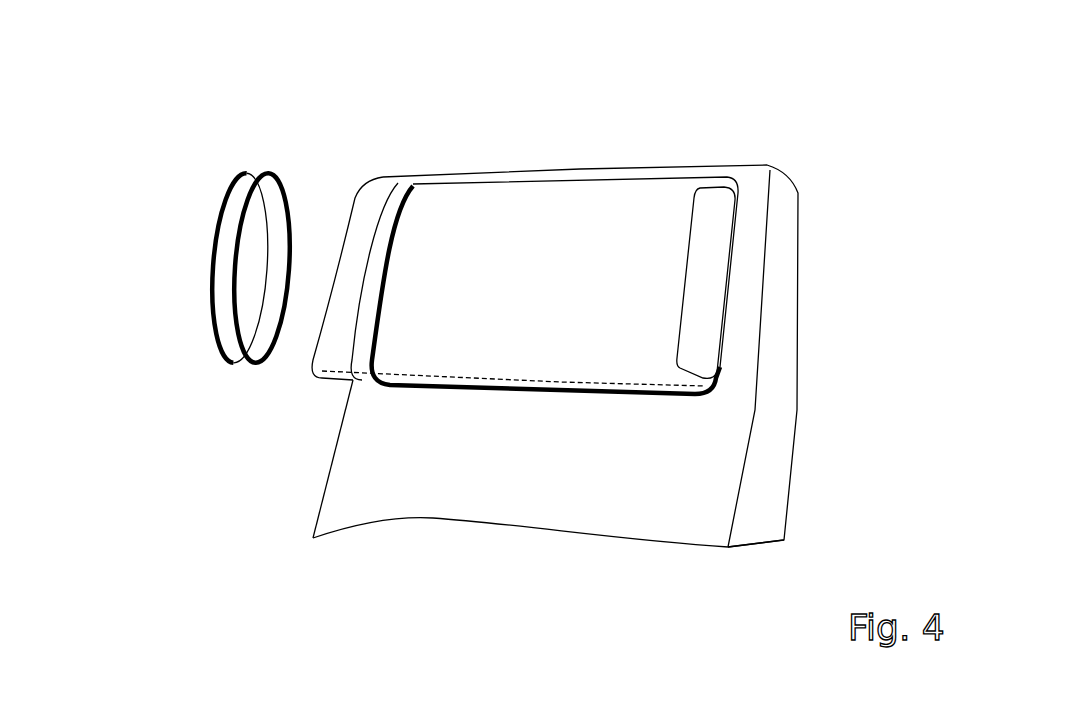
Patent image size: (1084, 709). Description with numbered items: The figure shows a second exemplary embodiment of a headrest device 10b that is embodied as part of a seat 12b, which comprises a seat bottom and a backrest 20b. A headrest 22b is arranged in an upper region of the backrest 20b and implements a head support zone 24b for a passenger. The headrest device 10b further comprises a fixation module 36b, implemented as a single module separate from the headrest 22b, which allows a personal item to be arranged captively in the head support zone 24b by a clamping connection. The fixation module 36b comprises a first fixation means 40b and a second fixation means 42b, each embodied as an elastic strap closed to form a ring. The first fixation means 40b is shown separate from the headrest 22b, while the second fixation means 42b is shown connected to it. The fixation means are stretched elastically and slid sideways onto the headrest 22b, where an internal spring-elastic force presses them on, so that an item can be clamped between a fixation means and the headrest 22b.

The headrest device 10b is at (425, 320).
The seat 12b is at (555, 320).
The backrest 20b is at (658, 470).
The headrest 22b is at (650, 247).
The head support zone 24b is at (523, 335).
The fixation module 36b is at (174, 267).
The first fixation means 40b is at (226, 236).
The second fixation means 42b is at (396, 185).